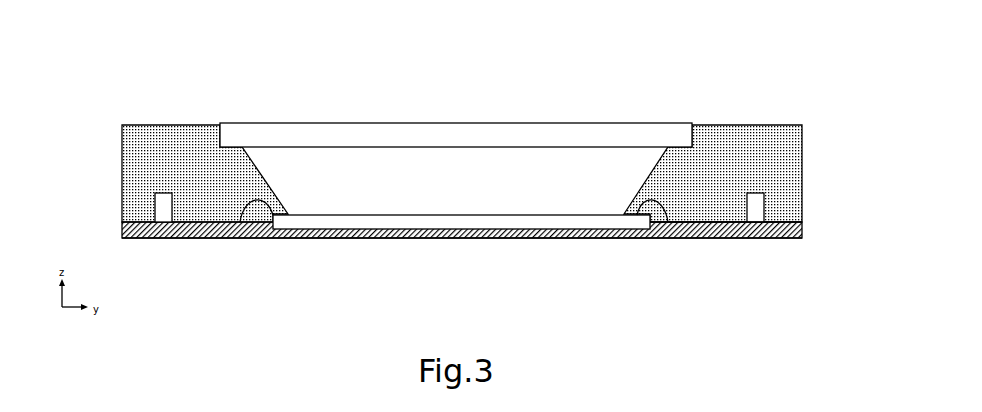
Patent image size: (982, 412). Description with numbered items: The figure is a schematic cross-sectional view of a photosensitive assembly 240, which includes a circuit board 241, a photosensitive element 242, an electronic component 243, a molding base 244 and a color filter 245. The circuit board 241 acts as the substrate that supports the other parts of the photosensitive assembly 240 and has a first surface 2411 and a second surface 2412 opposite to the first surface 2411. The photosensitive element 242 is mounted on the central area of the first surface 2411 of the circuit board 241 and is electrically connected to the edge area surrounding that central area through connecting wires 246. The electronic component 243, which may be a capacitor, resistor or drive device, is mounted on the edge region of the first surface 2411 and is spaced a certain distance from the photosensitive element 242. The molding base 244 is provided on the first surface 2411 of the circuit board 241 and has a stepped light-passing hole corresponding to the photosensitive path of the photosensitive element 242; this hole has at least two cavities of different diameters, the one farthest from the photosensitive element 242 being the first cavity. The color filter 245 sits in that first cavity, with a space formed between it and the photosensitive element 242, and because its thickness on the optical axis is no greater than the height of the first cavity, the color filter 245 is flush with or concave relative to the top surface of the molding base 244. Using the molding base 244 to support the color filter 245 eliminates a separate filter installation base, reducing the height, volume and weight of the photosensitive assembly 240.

The photosensitive assembly 240 is at (470, 25).
The circuit board 241 is at (803, 229).
The first surface 2411 is at (780, 216).
The second surface 2412 is at (765, 247).
The photosensitive element 242 is at (450, 229).
The electronic component 243 is at (158, 209).
The molding base 244 is at (131, 154).
The color filter 245 is at (448, 124).
The connecting wires 246 is at (243, 224).